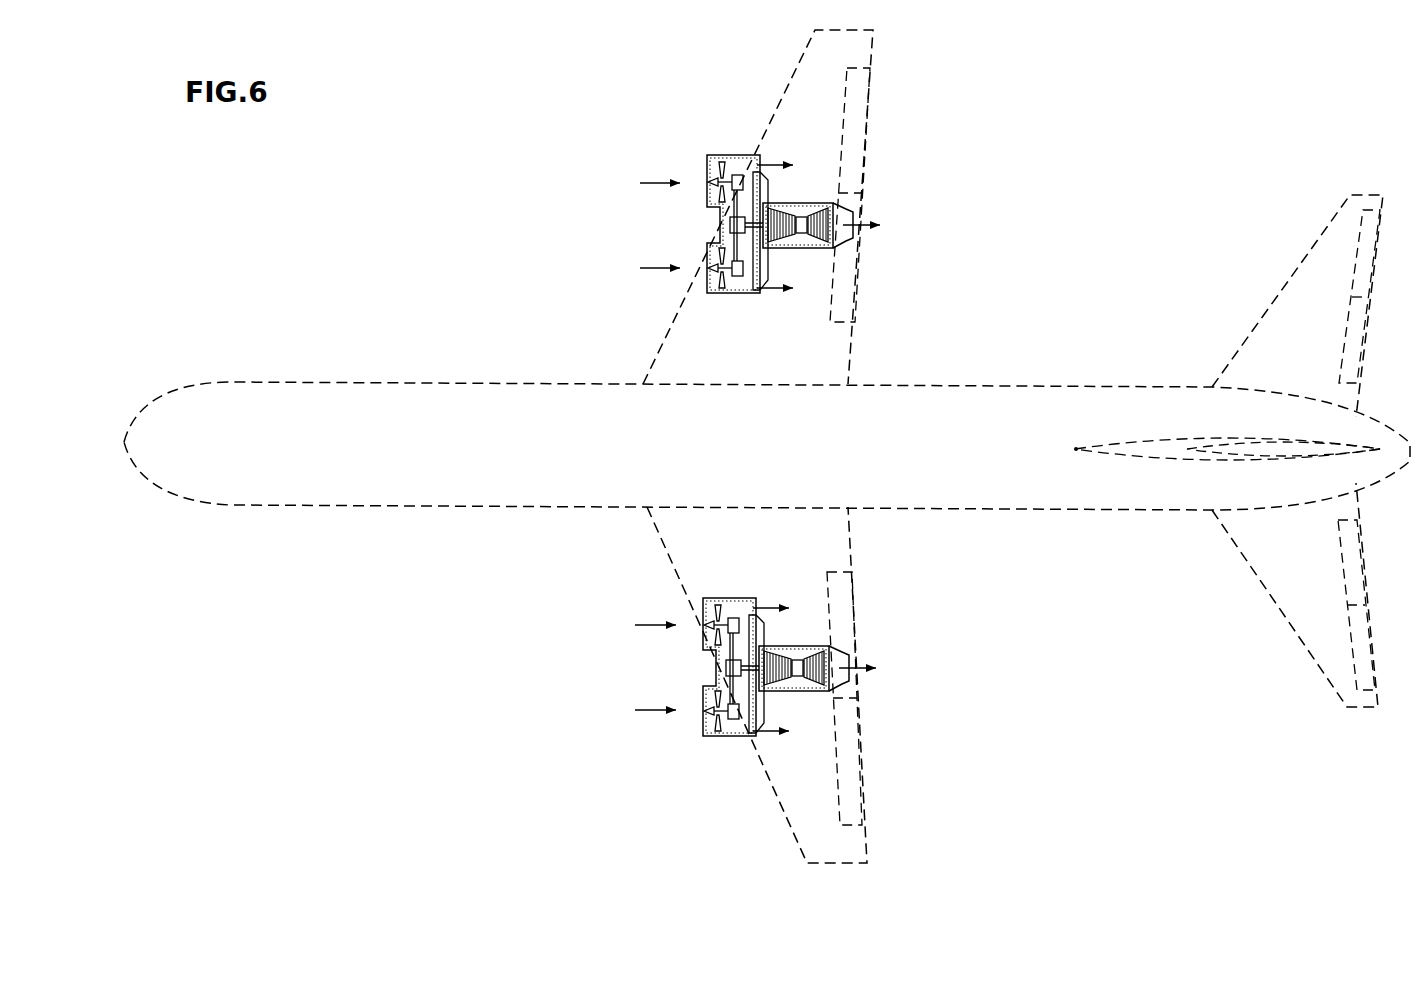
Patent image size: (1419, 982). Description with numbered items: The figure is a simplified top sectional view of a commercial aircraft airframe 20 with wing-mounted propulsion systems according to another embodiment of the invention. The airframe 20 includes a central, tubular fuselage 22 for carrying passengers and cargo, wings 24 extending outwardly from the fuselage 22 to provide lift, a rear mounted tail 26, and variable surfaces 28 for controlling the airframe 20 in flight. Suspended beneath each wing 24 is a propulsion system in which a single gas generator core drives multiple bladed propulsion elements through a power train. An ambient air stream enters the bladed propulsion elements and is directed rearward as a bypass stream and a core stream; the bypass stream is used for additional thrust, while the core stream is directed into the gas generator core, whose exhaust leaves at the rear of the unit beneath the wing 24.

The airframe 20 is at (363, 228).
The fuselage 22 is at (428, 392).
The wing 24 is at (762, 140).
The tail 26 is at (1290, 630).
The variable surfaces 28 is at (850, 187).